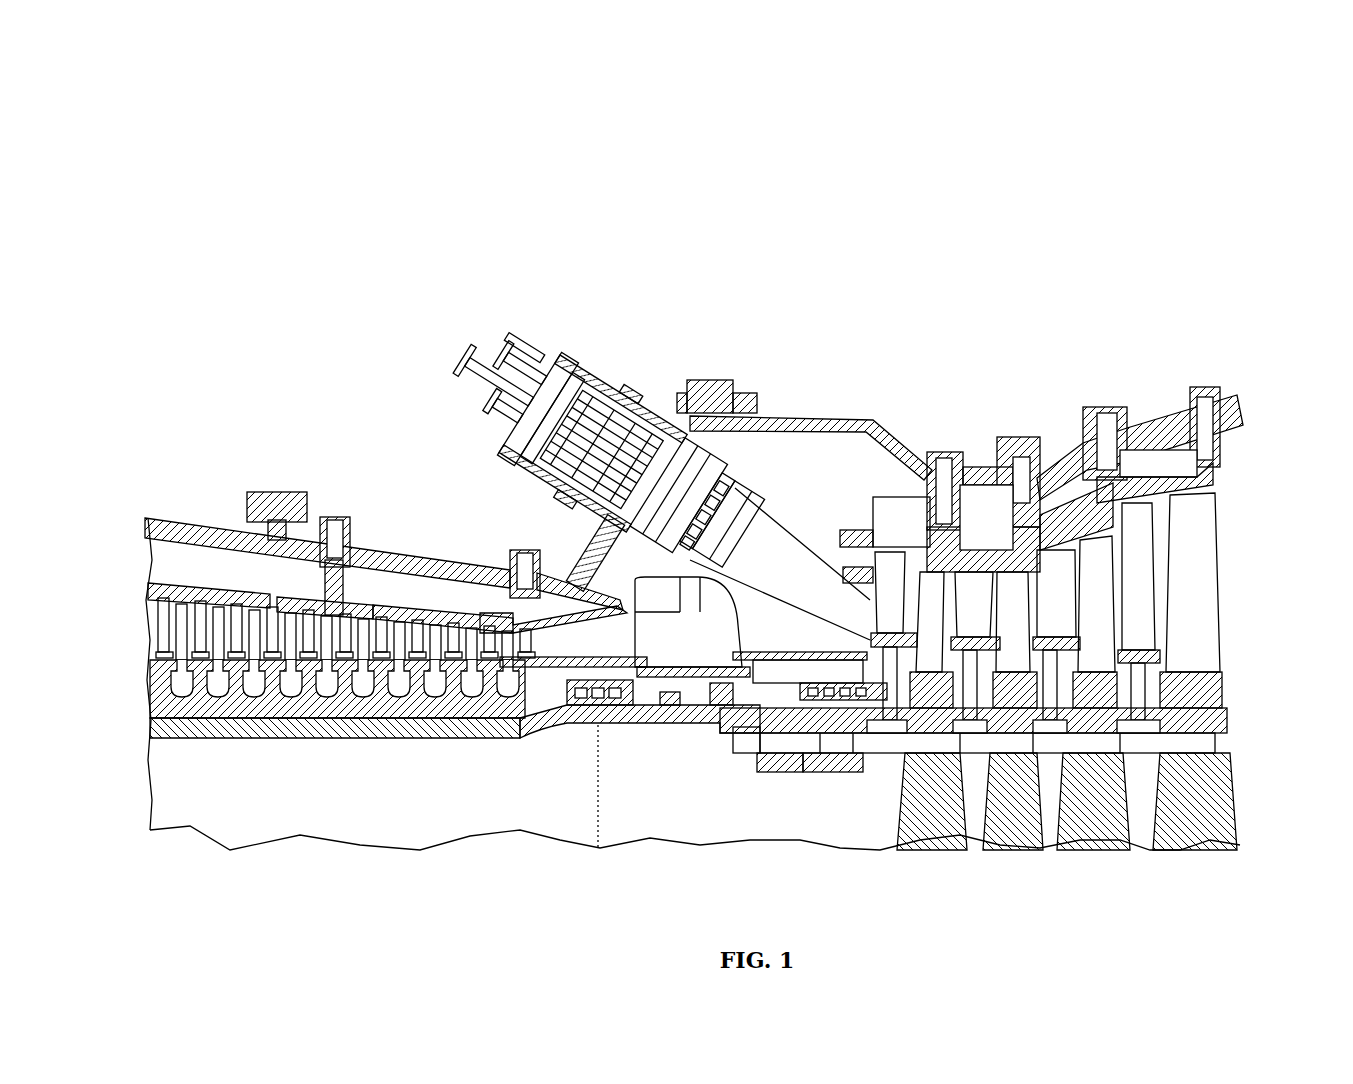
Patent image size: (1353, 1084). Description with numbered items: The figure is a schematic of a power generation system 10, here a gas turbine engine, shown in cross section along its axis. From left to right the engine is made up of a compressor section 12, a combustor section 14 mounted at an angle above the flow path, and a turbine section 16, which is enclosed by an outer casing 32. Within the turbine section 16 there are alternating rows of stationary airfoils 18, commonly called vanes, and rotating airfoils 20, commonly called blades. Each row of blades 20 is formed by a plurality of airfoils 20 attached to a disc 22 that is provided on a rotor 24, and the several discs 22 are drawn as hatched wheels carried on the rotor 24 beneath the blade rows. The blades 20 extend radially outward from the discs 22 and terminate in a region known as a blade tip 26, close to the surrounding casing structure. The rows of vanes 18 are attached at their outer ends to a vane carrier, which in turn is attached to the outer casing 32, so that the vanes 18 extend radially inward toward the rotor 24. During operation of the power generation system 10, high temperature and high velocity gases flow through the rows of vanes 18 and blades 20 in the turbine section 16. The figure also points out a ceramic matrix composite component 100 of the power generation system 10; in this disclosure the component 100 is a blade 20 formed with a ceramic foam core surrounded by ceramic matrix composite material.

The power generation system 10 is at (285, 276).
The compressor section 12 is at (220, 474).
The combustor section 14 is at (722, 366).
The turbine section 16 is at (1136, 356).
The stationary airfoils 18 is at (904, 613).
The rotating airfoils 20 is at (1026, 627).
The disc 22 is at (1187, 725).
The rotor 24 is at (883, 720).
The blade tip 26 is at (855, 624).
The outer casing 32 is at (1152, 420).
The ceramic matrix composite component 100 is at (1145, 600).